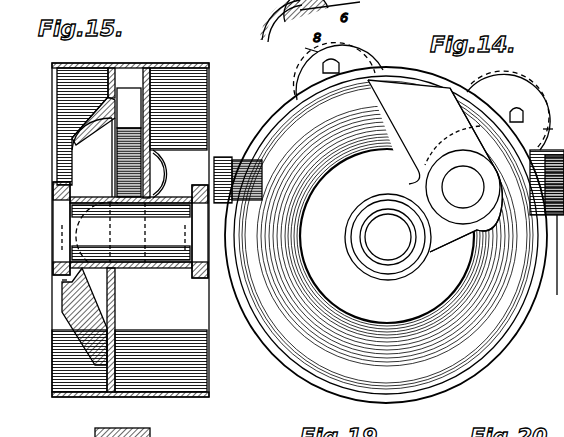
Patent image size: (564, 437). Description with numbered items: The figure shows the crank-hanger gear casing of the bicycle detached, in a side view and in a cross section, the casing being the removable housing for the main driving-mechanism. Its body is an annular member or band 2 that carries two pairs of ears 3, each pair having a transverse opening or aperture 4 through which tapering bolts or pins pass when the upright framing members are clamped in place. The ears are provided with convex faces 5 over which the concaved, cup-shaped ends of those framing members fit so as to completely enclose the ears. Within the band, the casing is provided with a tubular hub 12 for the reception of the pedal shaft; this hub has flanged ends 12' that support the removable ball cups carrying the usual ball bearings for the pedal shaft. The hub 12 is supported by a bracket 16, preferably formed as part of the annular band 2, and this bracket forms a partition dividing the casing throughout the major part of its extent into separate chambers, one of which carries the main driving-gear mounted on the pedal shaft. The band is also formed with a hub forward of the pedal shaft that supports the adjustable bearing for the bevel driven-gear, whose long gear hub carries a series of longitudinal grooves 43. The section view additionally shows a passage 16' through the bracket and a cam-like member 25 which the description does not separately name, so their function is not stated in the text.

In FIG. 15, the annular member or band 2 is at (210, 90).
In FIG. 14, the annular member or band 2 is at (487, 370).
In FIG. 15, the ears 3 is at (141, 108).
In FIG. 14, the ears 3 is at (345, 58).
In FIG. 14, the transverse opening or aperture 4 is at (323, 65).
In FIG. 14, the convex faces 5 is at (425, 90).
In FIG. 15, the tubular hub 12 is at (131, 247).
In FIG. 15, the flanged ends 12' is at (127, 245).
In FIG. 14, the flanged ends 12' is at (322, 234).
In FIG. 15, the bracket 16 is at (66, 330).
In FIG. 14, the bracket 16 is at (388, 235).
In FIG. 15, the passage 16' is at (65, 148).
In FIG. 14, the passage 16' is at (463, 210).
In FIG. 15, the cam 25 is at (152, 118).
In FIG. 14, the cam 25 is at (427, 97).
In FIG. 14, the longitudinal grooves 43 is at (545, 290).